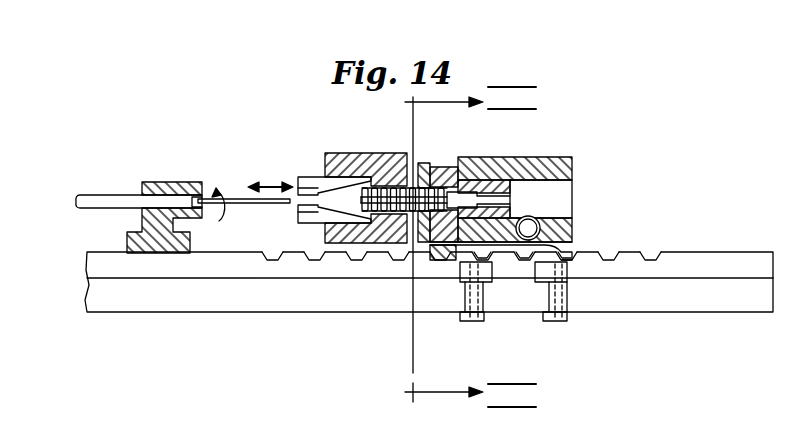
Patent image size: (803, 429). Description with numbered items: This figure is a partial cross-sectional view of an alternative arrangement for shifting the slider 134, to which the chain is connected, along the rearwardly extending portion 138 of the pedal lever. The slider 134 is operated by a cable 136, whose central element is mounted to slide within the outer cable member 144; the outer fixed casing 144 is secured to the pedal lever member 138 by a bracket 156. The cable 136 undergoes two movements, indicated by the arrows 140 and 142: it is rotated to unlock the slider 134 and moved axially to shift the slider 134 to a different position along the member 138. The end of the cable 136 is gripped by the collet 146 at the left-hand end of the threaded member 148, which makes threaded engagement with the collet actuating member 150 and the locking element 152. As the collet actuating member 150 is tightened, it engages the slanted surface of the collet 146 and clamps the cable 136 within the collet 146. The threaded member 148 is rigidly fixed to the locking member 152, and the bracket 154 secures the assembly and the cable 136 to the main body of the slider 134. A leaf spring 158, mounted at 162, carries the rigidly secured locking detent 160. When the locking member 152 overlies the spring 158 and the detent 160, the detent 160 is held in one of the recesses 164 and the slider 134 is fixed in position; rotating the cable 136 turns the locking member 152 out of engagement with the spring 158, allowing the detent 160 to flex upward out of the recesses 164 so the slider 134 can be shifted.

The slider 134 is at (573, 162).
The cable 136 is at (241, 197).
The rearwardly extending portion of the pedal lever 138 is at (217, 306).
The arrow 140 is at (271, 182).
The arrow 142 is at (229, 208).
The outer cable member 144 is at (103, 193).
The collet 146 is at (318, 217).
The threaded member 148 is at (395, 214).
The collet actuating member 150 is at (352, 152).
The locking element 152 is at (481, 182).
The bracket 154 is at (423, 166).
The bracket 156 is at (127, 238).
The spring 158 is at (497, 258).
The locking detent 160 is at (441, 262).
The spring mounting 162 is at (536, 228).
The recesses 164 is at (358, 259).